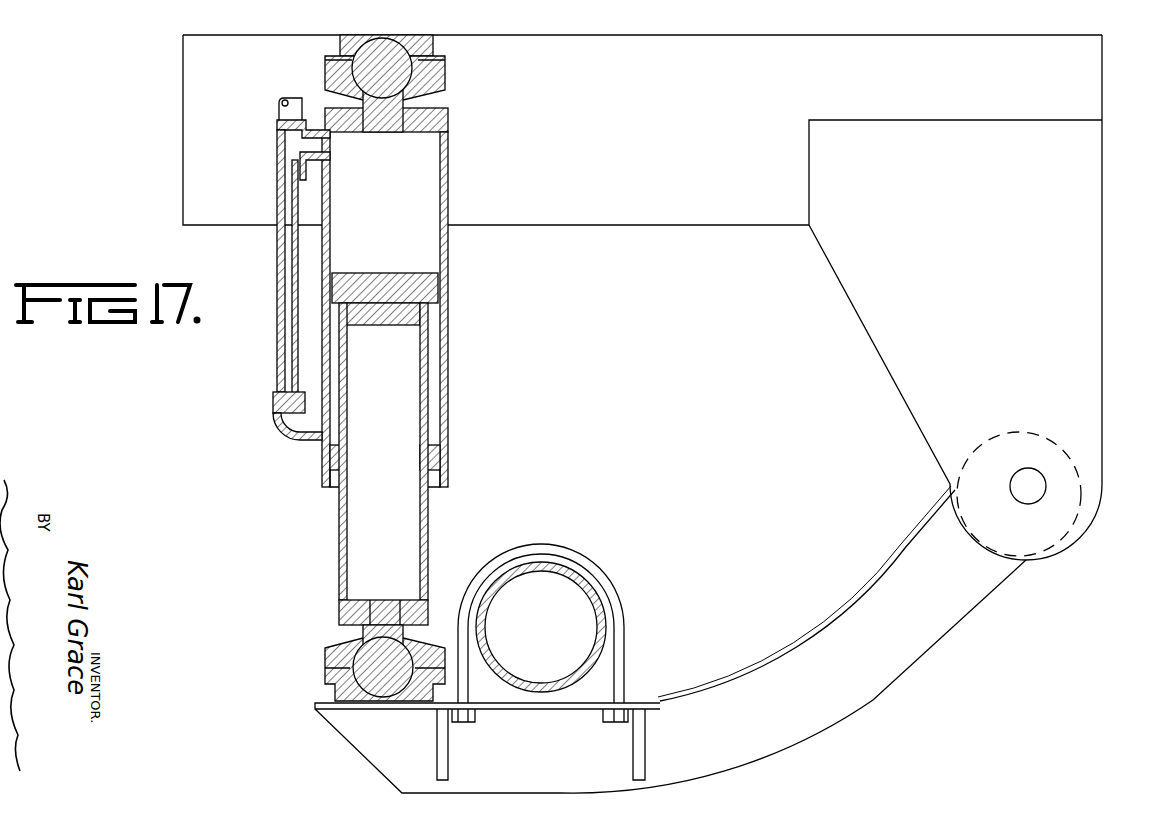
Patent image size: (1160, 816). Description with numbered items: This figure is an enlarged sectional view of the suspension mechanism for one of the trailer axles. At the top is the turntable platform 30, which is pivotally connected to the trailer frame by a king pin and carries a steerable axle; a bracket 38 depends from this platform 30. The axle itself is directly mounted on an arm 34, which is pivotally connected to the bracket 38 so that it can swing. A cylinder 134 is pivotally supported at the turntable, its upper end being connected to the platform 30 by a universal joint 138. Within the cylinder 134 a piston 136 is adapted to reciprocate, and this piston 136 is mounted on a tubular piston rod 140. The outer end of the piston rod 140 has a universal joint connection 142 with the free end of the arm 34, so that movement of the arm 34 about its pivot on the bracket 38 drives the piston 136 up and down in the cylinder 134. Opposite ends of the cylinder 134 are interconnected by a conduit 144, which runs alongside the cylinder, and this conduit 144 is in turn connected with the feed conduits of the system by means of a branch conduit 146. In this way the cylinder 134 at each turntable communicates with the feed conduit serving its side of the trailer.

The turntable platform 30 is at (825, 45).
The bracket 38 is at (1087, 297).
The arm 34 is at (862, 683).
The cylinder 134 is at (448, 380).
The piston 136 is at (427, 287).
The universal joint 138 is at (446, 77).
The tubular piston rod 140 is at (427, 557).
The universal joint connection 142 is at (330, 657).
The conduit 144 is at (280, 250).
The branch conduit 146 is at (280, 112).